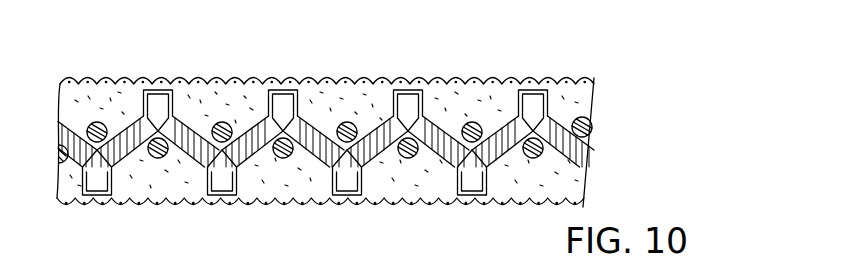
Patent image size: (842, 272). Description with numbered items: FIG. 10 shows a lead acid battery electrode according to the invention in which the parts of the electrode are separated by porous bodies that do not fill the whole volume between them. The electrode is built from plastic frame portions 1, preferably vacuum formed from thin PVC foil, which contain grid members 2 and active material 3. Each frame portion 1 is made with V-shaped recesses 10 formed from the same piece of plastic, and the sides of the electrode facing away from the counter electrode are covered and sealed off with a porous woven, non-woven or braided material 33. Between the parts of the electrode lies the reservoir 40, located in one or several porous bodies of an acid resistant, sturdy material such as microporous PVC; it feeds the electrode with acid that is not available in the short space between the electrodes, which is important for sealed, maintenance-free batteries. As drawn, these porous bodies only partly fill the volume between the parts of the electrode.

The plastic frame portion 1 is at (140, 88).
The grid member 2 is at (338, 128).
The active material 3 is at (178, 103).
The V-shaped recess 10 is at (246, 122).
The porous material 33 is at (371, 84).
The reservoir 40 is at (530, 102).